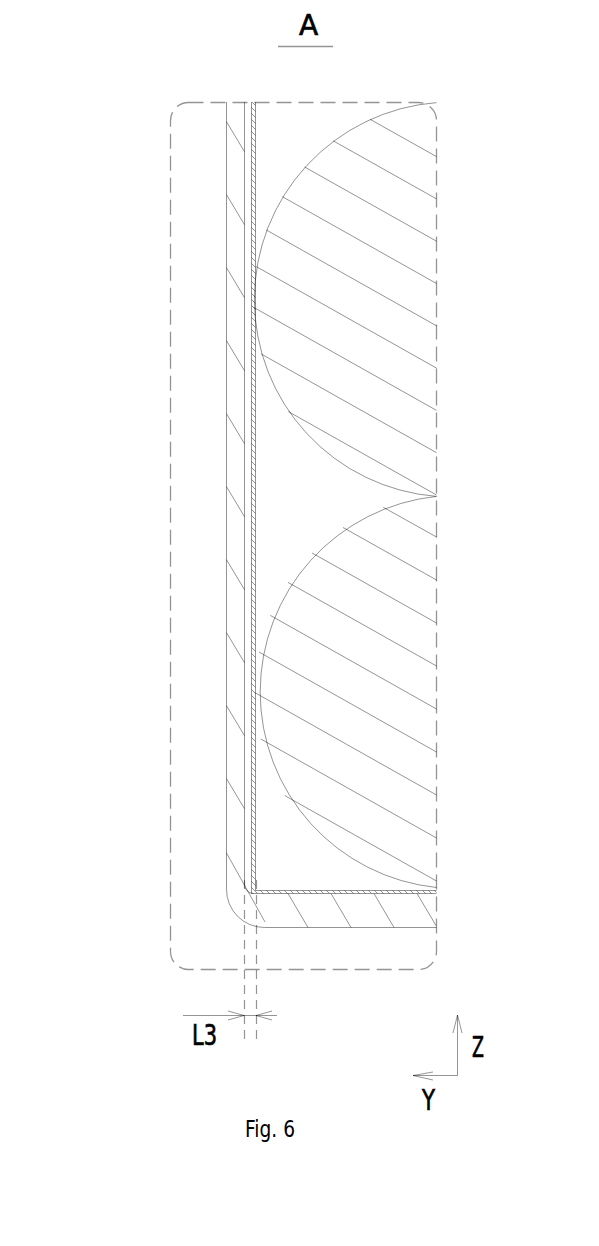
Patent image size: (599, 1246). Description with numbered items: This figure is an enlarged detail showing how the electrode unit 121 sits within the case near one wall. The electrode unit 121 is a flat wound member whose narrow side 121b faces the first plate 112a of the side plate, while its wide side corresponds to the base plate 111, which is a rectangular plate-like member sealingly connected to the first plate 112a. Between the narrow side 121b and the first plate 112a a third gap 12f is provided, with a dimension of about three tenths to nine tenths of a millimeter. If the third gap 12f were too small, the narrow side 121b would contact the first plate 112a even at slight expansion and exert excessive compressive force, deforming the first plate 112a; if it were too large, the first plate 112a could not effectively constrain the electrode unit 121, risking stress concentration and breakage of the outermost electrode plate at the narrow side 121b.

The narrow side 121b is at (297, 181).
The electrode unit 121 is at (343, 288).
The first plate 112a is at (233, 418).
The third gap 12f is at (255, 686).
The base plate 111 is at (357, 913).